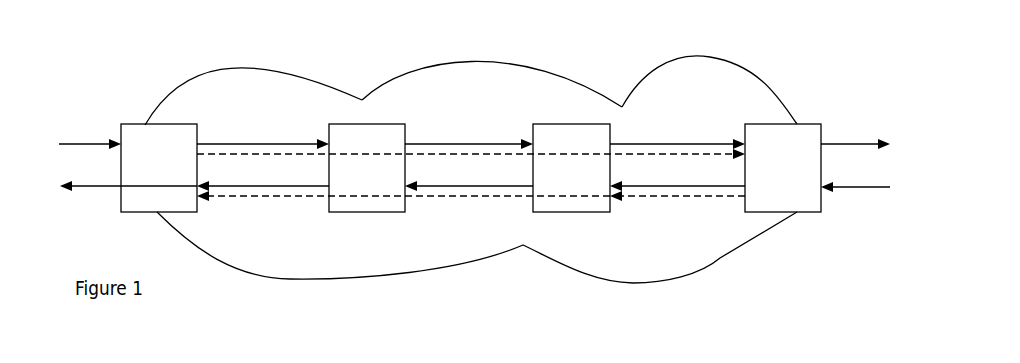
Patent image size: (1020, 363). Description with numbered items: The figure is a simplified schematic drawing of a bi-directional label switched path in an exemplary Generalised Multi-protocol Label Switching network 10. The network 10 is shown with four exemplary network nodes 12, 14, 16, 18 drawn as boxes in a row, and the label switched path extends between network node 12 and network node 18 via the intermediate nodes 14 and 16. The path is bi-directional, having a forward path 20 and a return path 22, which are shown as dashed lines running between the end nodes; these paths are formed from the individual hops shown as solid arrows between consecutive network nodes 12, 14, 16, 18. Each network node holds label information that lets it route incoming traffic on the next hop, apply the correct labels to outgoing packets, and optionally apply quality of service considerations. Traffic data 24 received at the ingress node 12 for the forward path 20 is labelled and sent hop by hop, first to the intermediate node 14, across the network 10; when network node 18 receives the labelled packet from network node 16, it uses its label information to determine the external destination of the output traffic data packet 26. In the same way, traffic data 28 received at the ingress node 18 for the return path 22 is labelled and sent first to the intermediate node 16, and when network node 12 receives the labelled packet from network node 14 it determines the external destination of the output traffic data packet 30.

The network 10 is at (720, 258).
The network node 12 is at (128, 125).
The network node 14 is at (390, 124).
The network node 16 is at (597, 124).
The network node 18 is at (810, 124).
The forward path 20 is at (240, 154).
The return path 22 is at (297, 196).
The traffic data 24 is at (99, 143).
The output traffic data packet 26 is at (873, 143).
The traffic data 28 is at (838, 189).
The output traffic data packet 30 is at (101, 186).